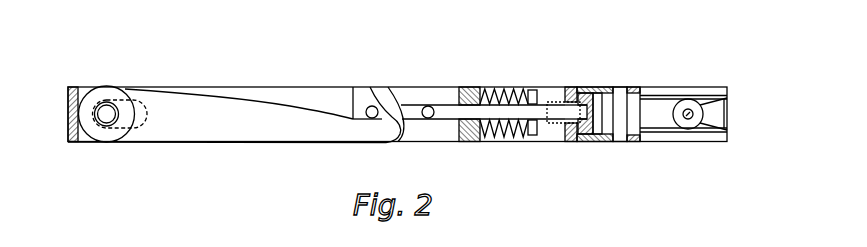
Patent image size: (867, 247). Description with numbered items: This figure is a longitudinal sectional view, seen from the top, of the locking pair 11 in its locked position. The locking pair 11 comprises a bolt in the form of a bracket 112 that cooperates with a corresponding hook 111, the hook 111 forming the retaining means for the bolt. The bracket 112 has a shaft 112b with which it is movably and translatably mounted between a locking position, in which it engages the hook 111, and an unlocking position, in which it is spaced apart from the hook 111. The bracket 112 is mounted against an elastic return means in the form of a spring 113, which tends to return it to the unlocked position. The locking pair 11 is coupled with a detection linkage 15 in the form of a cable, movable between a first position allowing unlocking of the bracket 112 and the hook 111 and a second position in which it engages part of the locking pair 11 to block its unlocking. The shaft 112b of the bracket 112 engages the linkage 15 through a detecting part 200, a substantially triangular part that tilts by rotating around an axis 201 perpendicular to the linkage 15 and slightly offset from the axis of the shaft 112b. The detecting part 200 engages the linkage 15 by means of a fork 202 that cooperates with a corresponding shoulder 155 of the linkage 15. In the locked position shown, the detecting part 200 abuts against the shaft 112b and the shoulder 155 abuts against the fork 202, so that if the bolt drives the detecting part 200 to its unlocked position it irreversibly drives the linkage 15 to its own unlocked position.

The locking pair 11 is at (574, 50).
The hook 111 is at (200, 133).
The bracket 112 is at (445, 112).
The shaft 112b is at (547, 103).
The spring 113 is at (500, 135).
The detecting part 200 is at (658, 113).
The axis 201 is at (622, 142).
The fork 202 is at (665, 138).
The shoulder 155 is at (702, 130).
The detection linkage 15 is at (697, 112).